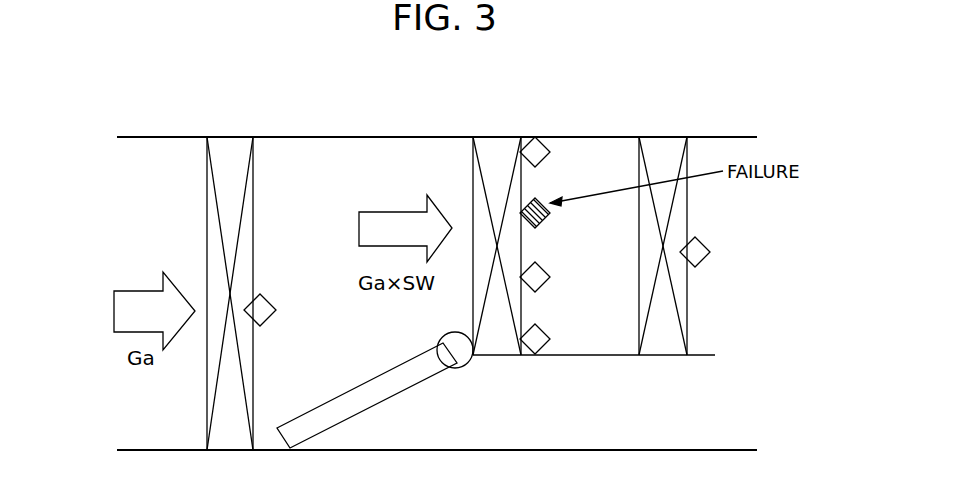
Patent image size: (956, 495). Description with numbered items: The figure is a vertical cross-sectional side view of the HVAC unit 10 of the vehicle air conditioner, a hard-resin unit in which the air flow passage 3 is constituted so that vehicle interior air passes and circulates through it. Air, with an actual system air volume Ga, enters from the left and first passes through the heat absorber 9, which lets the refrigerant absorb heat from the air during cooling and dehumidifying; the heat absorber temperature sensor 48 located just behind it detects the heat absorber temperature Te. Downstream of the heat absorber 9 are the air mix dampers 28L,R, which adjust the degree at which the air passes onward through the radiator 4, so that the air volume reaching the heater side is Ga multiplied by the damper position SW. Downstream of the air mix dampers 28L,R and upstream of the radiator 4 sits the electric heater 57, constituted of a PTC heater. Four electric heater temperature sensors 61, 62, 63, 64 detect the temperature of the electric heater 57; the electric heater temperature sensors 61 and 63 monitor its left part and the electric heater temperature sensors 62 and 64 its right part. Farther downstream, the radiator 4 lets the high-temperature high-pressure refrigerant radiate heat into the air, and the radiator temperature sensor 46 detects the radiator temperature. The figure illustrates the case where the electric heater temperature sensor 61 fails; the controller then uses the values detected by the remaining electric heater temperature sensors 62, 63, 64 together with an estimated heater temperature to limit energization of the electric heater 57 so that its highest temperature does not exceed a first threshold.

The air flow passage 3 is at (437, 265).
The HVAC unit 10 is at (290, 137).
The heat absorber 9 is at (207, 213).
The electric heater 57 is at (498, 152).
The radiator 4 is at (665, 152).
The heat absorber temperature sensor 48 is at (271, 302).
The electric heater temperature sensor 61 is at (545, 223).
The electric heater temperature sensor 62 is at (545, 287).
The electric heater temperature sensor 63 is at (545, 162).
The electric heater temperature sensor 64 is at (545, 349).
The radiator temperature sensor 46 is at (706, 245).
The air mix dampers 28L,R is at (407, 390).